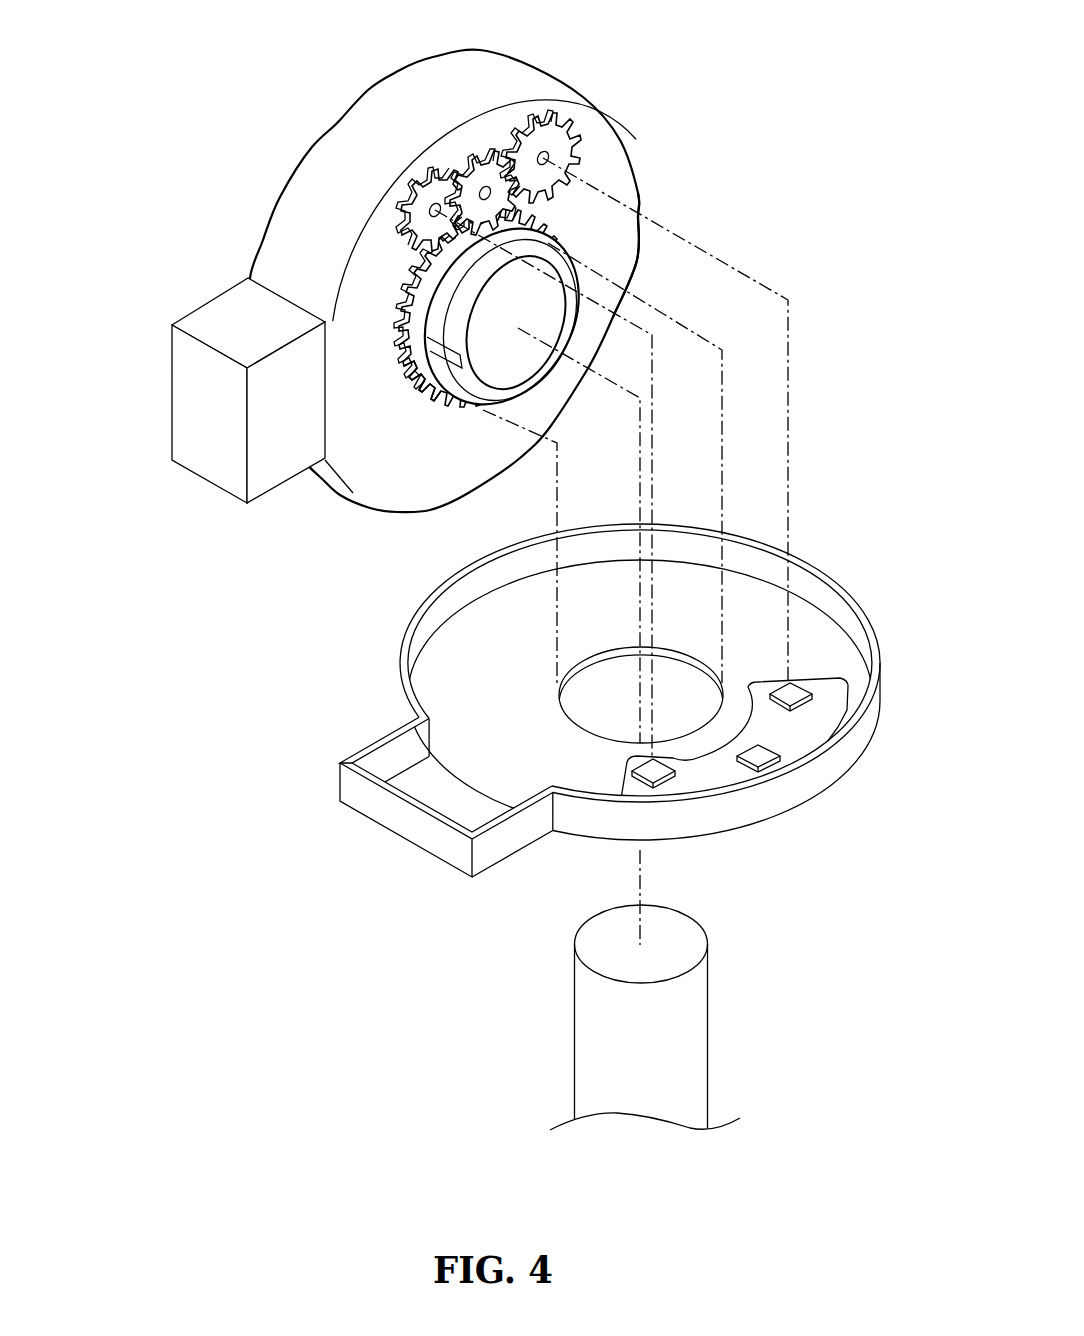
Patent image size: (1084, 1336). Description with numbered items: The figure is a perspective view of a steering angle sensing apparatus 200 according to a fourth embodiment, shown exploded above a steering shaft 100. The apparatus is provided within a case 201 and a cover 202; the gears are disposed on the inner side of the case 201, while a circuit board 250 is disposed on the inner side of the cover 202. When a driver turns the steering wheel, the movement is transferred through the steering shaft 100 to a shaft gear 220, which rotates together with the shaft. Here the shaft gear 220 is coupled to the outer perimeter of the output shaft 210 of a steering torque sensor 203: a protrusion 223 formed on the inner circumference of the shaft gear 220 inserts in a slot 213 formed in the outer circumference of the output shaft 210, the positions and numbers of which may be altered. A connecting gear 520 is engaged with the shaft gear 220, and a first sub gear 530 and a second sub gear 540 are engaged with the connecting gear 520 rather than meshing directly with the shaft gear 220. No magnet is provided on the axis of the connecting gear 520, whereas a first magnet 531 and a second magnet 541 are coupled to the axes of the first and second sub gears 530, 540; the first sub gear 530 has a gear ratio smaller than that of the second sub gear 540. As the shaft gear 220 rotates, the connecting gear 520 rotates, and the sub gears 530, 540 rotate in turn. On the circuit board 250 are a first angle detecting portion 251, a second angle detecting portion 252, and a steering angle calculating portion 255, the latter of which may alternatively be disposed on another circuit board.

The steering shaft 100 is at (694, 1042).
The steering angle sensing apparatus 200 is at (661, 207).
The case 201 is at (195, 385).
The cover 202 is at (404, 817).
The steering torque sensor 203 is at (262, 233).
The output shaft 210 is at (566, 287).
The slot 213 is at (463, 350).
The shaft gear 220 is at (410, 320).
The protrusion 223 is at (428, 352).
The circuit board 250 is at (826, 688).
The first angle detecting portion 251 is at (680, 764).
The second angle detecting portion 252 is at (810, 700).
The steering angle calculating portion 255 is at (773, 762).
The connecting gear 520 is at (492, 148).
The first sub gear 530 is at (427, 176).
The first magnet 531 is at (403, 230).
The second sub gear 540 is at (553, 110).
The second magnet 541 is at (550, 158).